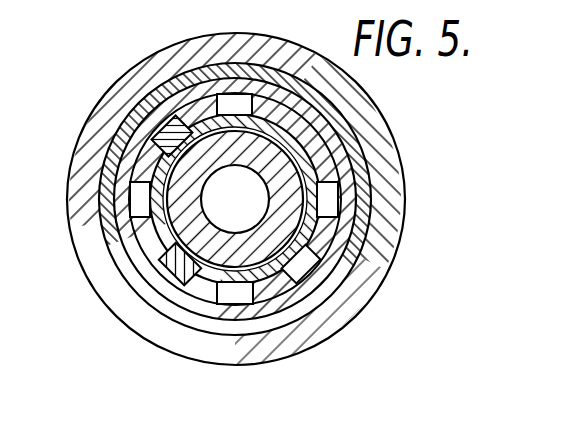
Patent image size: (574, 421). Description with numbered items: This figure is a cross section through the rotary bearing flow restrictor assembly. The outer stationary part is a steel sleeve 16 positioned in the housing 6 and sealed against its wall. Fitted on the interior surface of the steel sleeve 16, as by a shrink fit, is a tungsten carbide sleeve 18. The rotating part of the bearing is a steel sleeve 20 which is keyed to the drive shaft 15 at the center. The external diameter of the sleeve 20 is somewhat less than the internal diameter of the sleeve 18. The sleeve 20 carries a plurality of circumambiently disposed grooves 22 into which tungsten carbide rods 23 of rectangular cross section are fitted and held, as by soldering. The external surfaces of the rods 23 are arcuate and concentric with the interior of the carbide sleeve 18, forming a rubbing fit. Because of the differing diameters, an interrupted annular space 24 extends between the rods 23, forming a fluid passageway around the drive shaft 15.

The housing 6 is at (386, 190).
The drive shaft 15 is at (194, 198).
The steel sleeve 16 is at (360, 163).
The tungsten carbide sleeve 18 is at (345, 211).
The steel sleeve 20 is at (187, 287).
The grooves 22 is at (311, 245).
The tungsten carbide rods 23 is at (234, 104).
The interrupted annular space 24 is at (188, 96).